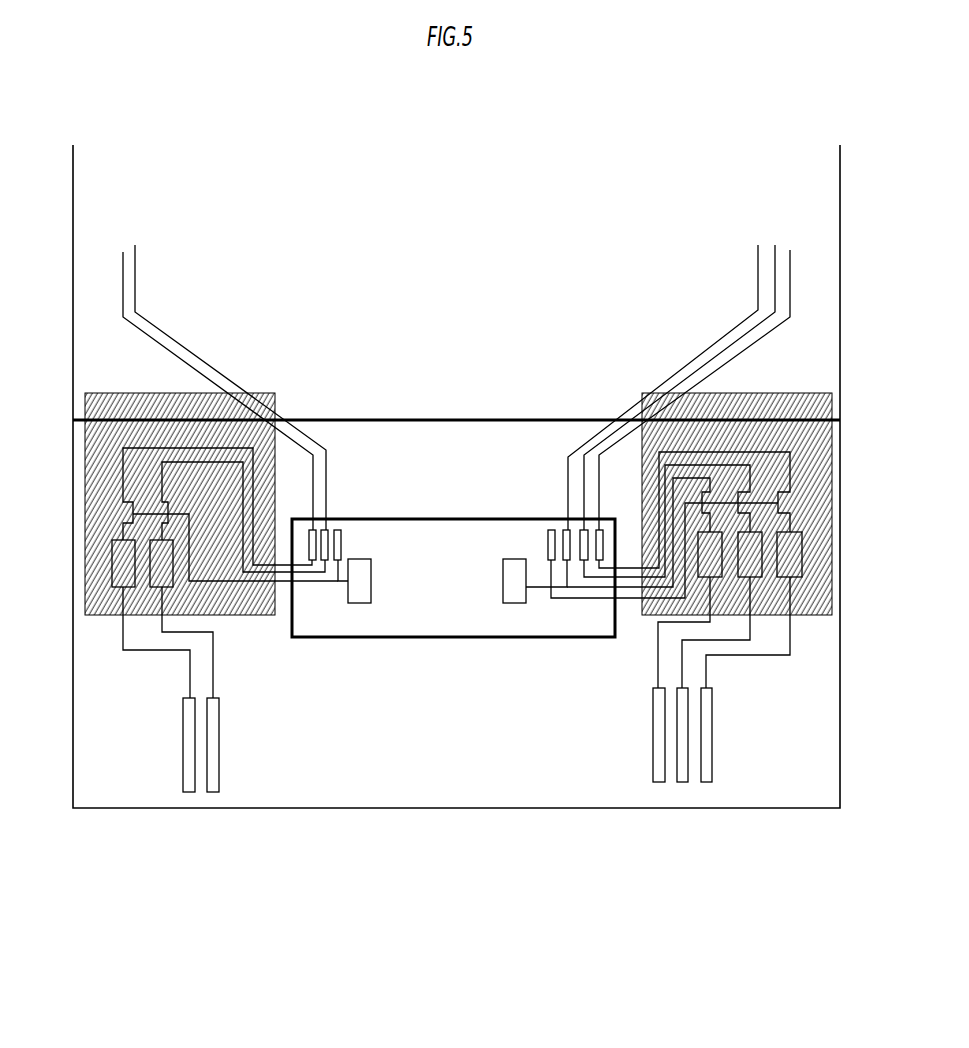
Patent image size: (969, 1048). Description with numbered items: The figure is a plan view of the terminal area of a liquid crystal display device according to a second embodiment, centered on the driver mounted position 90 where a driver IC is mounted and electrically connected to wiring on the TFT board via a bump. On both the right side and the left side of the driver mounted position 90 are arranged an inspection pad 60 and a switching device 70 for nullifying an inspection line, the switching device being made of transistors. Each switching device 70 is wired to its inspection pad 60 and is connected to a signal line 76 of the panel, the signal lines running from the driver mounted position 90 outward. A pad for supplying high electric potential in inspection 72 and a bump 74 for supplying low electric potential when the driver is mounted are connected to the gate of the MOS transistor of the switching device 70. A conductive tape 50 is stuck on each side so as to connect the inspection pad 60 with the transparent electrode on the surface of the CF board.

The conductive tape 50 is at (454, 481).
The inspection pad 60 is at (452, 684).
The switching device for nullifying an inspection line 70 is at (462, 488).
The pad for supplying high electric potential in inspection 72 is at (437, 715).
The bump for supplying low electric potential 74 is at (456, 439).
The signal line 76 is at (456, 383).
The driver mounted position 90 is at (453, 702).